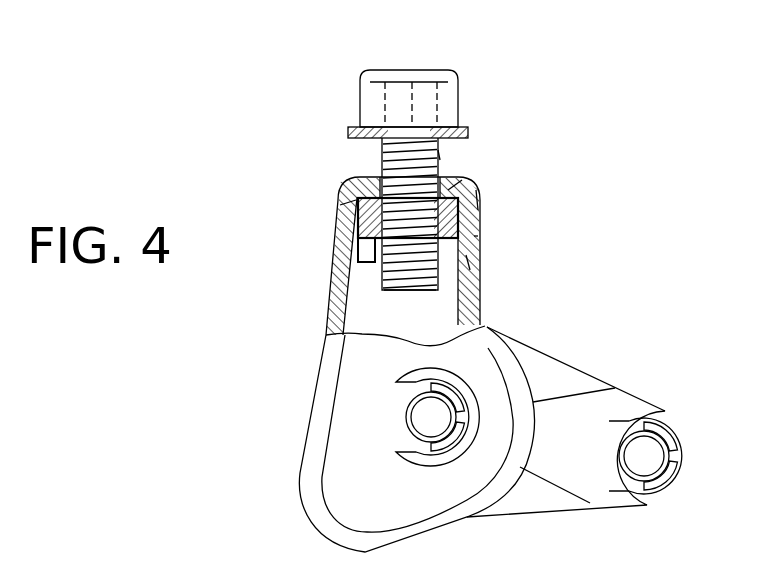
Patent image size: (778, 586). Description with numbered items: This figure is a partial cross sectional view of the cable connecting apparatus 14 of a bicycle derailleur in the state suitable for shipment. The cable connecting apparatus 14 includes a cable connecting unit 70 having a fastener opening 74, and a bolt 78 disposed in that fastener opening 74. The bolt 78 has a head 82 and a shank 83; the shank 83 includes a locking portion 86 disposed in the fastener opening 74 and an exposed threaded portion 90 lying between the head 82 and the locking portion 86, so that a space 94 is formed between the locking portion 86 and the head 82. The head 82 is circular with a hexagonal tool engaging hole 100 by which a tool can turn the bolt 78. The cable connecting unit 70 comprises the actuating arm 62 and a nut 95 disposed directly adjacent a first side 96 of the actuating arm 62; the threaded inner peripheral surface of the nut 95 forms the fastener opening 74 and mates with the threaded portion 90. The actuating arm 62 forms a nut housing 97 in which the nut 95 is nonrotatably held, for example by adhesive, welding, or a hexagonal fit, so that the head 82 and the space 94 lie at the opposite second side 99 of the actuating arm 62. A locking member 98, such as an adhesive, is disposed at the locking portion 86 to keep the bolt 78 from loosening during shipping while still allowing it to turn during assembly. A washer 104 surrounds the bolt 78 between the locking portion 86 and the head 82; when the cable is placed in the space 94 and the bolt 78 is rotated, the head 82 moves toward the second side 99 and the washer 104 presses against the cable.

The cable connecting apparatus 14 is at (578, 250).
The actuating arm 62 is at (480, 212).
The cable connecting unit 70 is at (338, 180).
The fastener opening 74 is at (370, 238).
The bolt 78 is at (470, 94).
The head 82 is at (400, 90).
The shank 83 is at (392, 294).
The locking portion 86 is at (475, 235).
The threaded portion 90 is at (383, 160).
The space 94 is at (455, 155).
The nut 95 is at (340, 205).
The first side 96 is at (478, 188).
The nut housing 97 is at (472, 260).
The locking member 98 is at (372, 277).
The second side 99 is at (448, 190).
The tool engaging hole 100 is at (430, 88).
The washer 104 is at (352, 128).